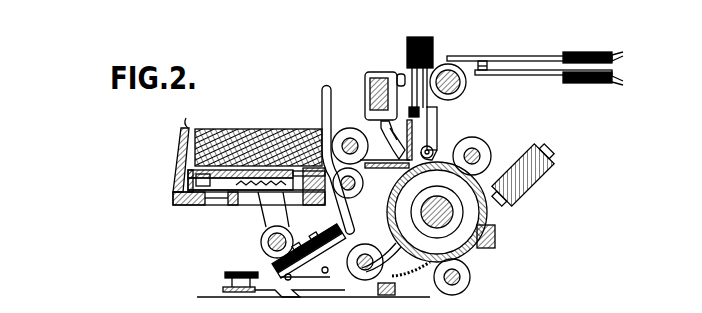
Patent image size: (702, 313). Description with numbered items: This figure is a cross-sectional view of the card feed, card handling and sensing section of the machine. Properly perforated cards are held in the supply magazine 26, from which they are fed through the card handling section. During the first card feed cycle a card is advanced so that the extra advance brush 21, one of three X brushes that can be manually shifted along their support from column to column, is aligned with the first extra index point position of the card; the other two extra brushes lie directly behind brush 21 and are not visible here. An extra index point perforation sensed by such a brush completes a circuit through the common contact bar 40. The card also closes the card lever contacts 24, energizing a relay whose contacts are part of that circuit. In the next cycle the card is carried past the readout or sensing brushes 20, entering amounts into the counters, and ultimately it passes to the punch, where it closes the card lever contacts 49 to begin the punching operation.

The readout or sensing brushes 20 is at (491, 193).
The extra advance brush 21 is at (383, 169).
The card lever contacts 24 is at (430, 117).
The supply magazine 26 is at (256, 129).
The common contact bar 40 is at (350, 138).
The card lever contacts 49 is at (275, 268).